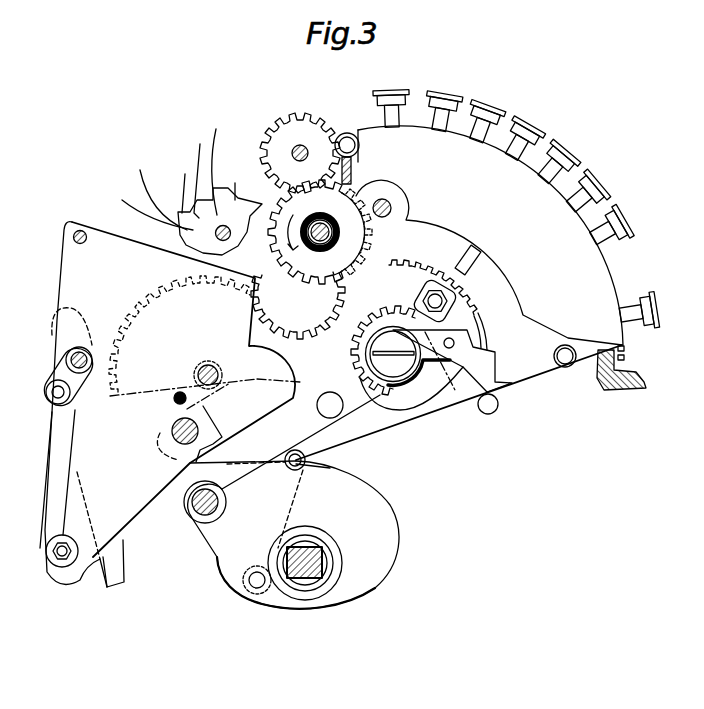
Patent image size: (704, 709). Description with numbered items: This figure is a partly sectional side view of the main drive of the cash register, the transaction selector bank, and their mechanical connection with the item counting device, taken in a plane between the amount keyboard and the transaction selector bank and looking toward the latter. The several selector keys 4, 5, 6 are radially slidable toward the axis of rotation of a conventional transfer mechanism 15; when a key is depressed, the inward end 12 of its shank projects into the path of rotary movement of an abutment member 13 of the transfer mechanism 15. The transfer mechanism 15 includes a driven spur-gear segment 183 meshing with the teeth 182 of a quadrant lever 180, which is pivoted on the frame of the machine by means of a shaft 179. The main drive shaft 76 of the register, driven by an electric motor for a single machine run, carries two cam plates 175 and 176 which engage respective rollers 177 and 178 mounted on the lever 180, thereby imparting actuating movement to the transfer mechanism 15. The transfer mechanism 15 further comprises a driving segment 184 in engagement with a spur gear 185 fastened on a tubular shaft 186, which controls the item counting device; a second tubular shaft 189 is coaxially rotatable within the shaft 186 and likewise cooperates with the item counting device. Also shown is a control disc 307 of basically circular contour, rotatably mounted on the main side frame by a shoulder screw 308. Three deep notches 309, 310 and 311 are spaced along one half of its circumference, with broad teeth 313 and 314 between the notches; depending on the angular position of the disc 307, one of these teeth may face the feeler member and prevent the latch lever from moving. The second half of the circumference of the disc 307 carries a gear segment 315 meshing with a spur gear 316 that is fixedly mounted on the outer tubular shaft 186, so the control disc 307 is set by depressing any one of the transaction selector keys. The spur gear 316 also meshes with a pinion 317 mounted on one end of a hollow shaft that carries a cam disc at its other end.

The selector key 4 is at (530, 128).
The selector key 5 is at (560, 170).
The selector key 6 is at (618, 229).
The inward end of key shank 12 is at (478, 266).
The abutment member 13 is at (520, 360).
The transfer mechanism 15 is at (405, 366).
The main drive shaft 76 is at (305, 579).
The cam plate 175 is at (342, 565).
The cam plate 176 is at (392, 545).
The roller 177 is at (263, 592).
The roller 178 is at (328, 463).
The shaft 179 is at (205, 520).
The quadrant lever 180 is at (306, 460).
The teeth 182 is at (373, 400).
The driven spur-gear segment 183 is at (348, 331).
The driving segment 184 is at (298, 305).
The spur gear 185 is at (278, 190).
The tubular shaft 186 is at (340, 216).
The tubular shaft 189 is at (380, 191).
The control disc 307 is at (257, 212).
The shoulder screw 308 is at (155, 190).
The notch 309 is at (234, 182).
The notch 310 is at (178, 184).
The notch 311 is at (147, 206).
The broad tooth 313 is at (224, 162).
The broad tooth 314 is at (183, 222).
The gear segment 315 is at (188, 173).
The spur gear 316 is at (344, 134).
The pinion 317 is at (300, 137).